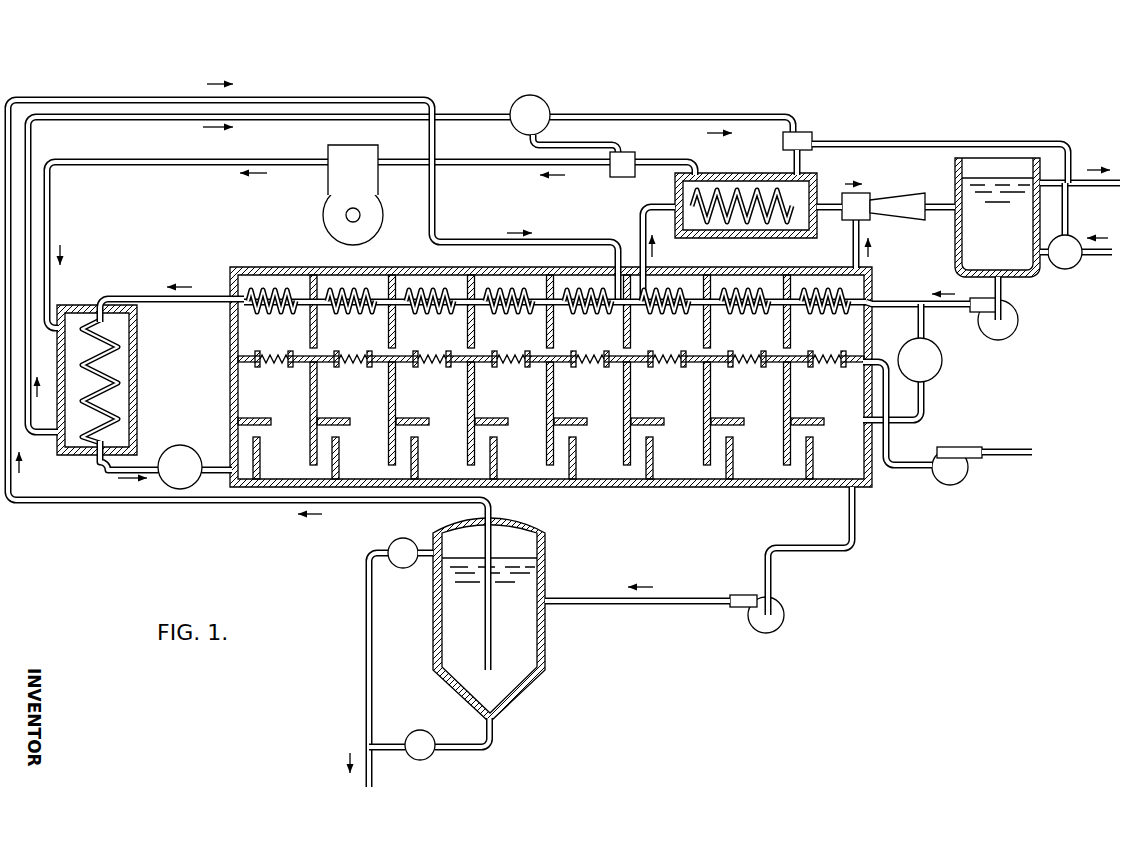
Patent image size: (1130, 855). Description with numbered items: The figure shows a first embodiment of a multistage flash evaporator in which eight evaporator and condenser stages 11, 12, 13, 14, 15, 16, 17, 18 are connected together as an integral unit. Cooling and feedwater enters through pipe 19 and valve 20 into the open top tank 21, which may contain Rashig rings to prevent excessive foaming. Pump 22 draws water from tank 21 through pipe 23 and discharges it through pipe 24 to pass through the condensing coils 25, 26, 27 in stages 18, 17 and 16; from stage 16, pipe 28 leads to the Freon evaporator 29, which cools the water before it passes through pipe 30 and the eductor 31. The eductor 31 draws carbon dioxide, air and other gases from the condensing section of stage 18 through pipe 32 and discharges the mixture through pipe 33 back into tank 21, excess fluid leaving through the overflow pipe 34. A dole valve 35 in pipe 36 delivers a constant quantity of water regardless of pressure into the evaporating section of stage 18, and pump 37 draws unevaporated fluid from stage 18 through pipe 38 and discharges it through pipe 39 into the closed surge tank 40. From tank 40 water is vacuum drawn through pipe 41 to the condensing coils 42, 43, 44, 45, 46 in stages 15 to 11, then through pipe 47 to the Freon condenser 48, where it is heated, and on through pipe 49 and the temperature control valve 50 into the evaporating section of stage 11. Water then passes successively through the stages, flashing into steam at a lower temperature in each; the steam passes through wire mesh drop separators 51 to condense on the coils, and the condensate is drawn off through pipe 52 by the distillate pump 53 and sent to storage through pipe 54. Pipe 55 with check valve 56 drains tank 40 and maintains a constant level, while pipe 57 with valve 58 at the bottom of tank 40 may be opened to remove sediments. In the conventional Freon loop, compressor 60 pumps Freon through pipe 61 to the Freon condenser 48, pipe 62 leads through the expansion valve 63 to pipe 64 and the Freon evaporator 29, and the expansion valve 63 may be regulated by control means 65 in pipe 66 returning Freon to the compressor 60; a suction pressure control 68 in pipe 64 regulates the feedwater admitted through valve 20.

The evaporator and condenser stage 11 is at (266, 439).
The evaporator and condenser stage 12 is at (345, 439).
The evaporator and condenser stage 13 is at (424, 439).
The evaporator and condenser stage 14 is at (503, 439).
The evaporator and condenser stage 15 is at (581, 439).
The evaporator and condenser stage 16 is at (659, 439).
The evaporator and condenser stage 17 is at (739, 439).
The evaporator and condenser stage 18 is at (819, 439).
The pipe 19 is at (1100, 256).
The valve 20 is at (1067, 270).
The open top tank 21 is at (955, 175).
The pump 22 is at (1015, 331).
The pipe 23 is at (1002, 290).
The pipe 24 is at (895, 300).
The condensing coil 25 is at (823, 311).
The condensing coil 26 is at (741, 311).
The condensing coil 27 is at (665, 311).
The pipe 28 is at (636, 212).
The Freon evaporator 29 is at (747, 237).
The pipe 30 is at (832, 222).
The eductor 31 is at (900, 198).
The pipe 32 is at (861, 265).
The pipe 33 is at (940, 209).
The overflow pipe 34 is at (1088, 186).
The dole valve 35 is at (942, 364).
The pipe 36 is at (927, 400).
The pump 37 is at (780, 622).
The pipe 38 is at (858, 540).
The pipe 39 is at (660, 606).
The closed surge tank 40 is at (546, 548).
The pipe 41 is at (273, 99).
The condensing coil 42 is at (586, 311).
The condensing coil 43 is at (506, 311).
The condensing coil 44 is at (430, 311).
The condensing coil 45 is at (348, 311).
The condensing coil 46 is at (268, 311).
The pipe 47 is at (198, 303).
The Freon condenser 48 is at (134, 389).
The pipe 49 is at (143, 465).
The temperature control valve 50 is at (201, 447).
The wire mesh drop separator 51 is at (269, 369).
The pipe 52 is at (924, 467).
The distillate pump 53 is at (954, 446).
The pipe 54 is at (1004, 458).
The pipe 55 is at (372, 644).
The check valve 56 is at (391, 546).
The pipe 57 is at (466, 752).
The valve 58 is at (412, 732).
The compressor 60 is at (328, 186).
The pipe 61 is at (214, 163).
The pipe 62 is at (158, 119).
The expansion valve 63 is at (544, 100).
The pipe 64 is at (700, 113).
The control means 65 is at (637, 153).
The pipe 66 is at (495, 164).
The suction pressure control 68 is at (813, 133).